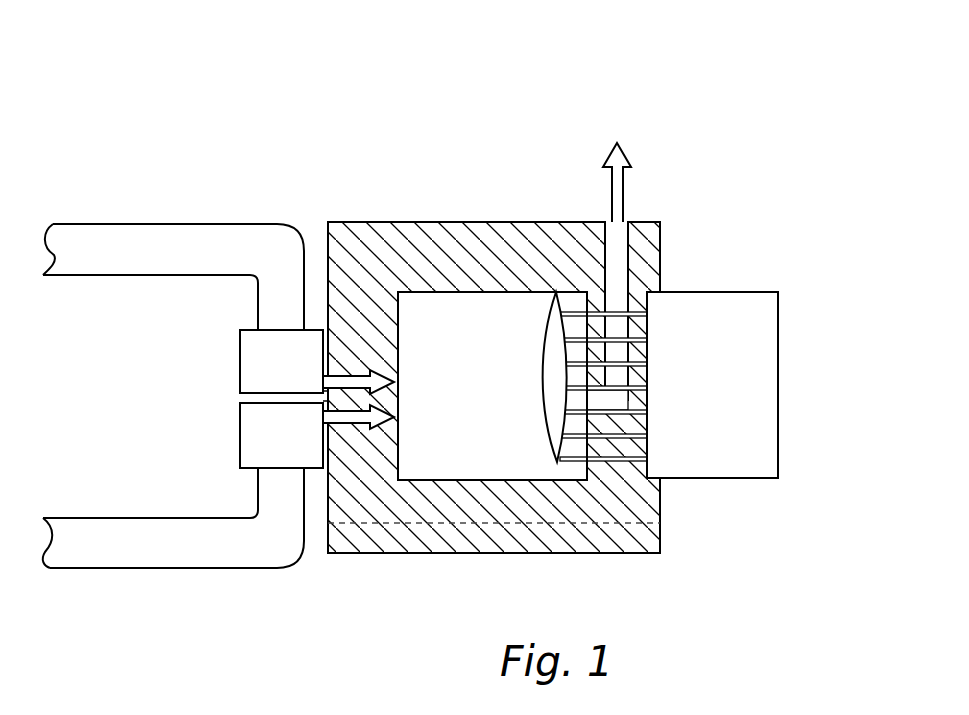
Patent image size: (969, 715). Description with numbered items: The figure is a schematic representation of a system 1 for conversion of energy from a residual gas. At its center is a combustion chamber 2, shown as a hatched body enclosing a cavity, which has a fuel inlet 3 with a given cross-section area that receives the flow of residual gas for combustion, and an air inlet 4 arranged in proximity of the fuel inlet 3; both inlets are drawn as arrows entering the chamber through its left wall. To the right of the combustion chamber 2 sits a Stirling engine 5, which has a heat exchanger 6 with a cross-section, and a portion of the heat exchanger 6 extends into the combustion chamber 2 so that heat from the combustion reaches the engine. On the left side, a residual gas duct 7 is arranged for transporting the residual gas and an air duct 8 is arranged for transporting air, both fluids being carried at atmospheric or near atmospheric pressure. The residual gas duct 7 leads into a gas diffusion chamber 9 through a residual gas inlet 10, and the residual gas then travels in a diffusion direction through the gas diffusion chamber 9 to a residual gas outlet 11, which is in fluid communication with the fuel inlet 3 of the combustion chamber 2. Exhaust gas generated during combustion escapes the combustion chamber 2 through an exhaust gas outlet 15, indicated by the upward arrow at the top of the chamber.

The system 1 is at (672, 148).
The combustion chamber 2 is at (492, 324).
The fuel inlet 3 is at (387, 424).
The air inlet 4 is at (392, 378).
The Stirling engine 5 is at (713, 300).
The heat exchanger 6 is at (549, 322).
The residual gas duct 7 is at (90, 547).
The air duct 8 is at (90, 243).
The gas diffusion chamber 9 is at (243, 428).
The residual gas inlet 10 is at (278, 470).
The residual gas outlet 11 is at (330, 422).
The exhaust gas outlet 15 is at (615, 137).